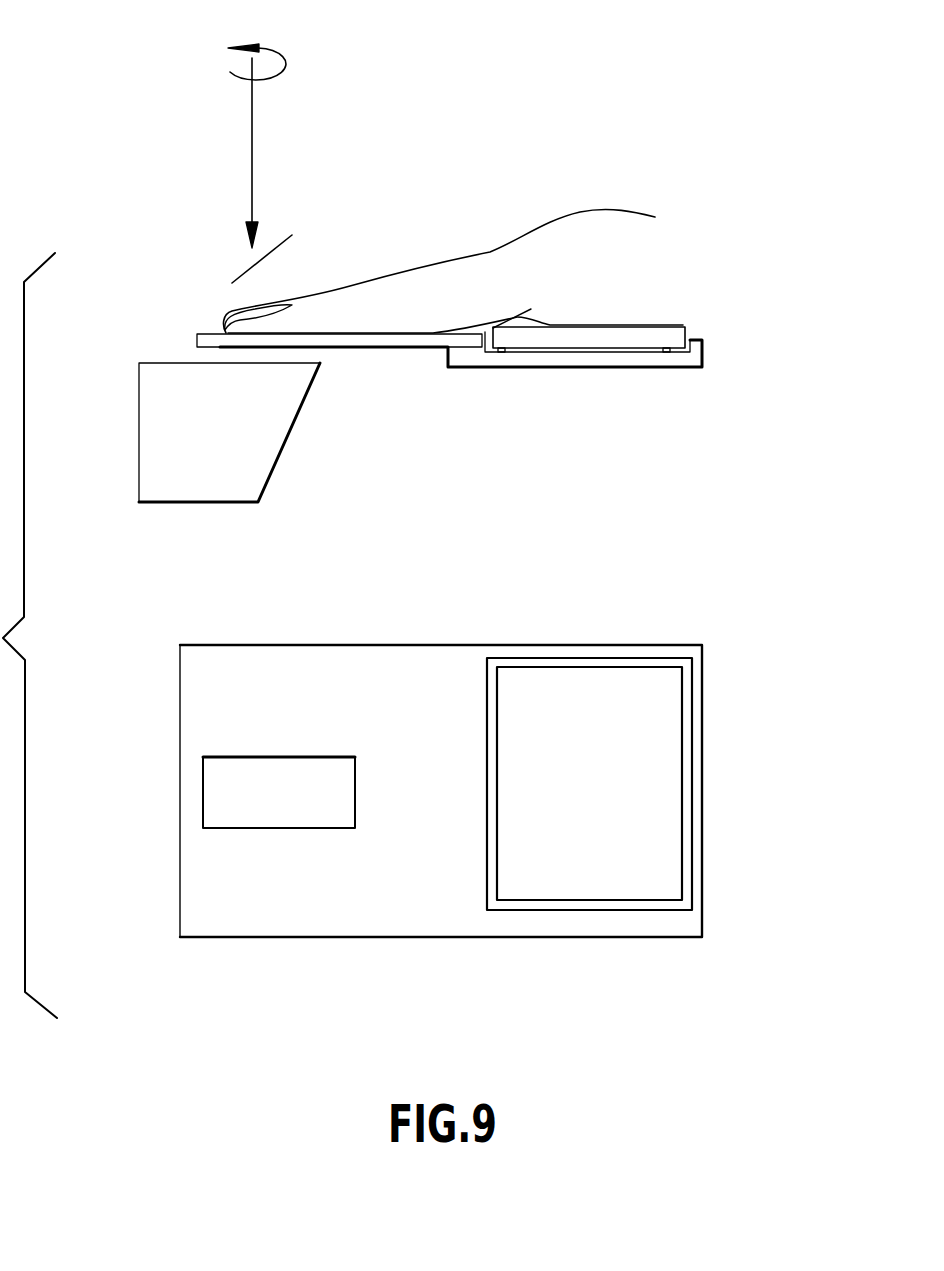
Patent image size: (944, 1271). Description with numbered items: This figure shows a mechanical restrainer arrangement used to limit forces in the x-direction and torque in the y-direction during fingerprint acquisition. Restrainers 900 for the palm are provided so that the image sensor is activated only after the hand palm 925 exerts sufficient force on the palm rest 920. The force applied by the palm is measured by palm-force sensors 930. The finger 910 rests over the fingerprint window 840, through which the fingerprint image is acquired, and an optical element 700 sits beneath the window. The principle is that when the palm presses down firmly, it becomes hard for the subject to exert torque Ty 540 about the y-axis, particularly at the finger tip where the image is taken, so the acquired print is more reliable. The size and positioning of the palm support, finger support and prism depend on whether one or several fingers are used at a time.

The torque Ty 540 is at (265, 47).
The lens / optical module 700 is at (140, 455).
The fingerprint window 840 is at (214, 345).
The restrainers 900 is at (298, 938).
The finger 910 is at (362, 310).
The palm rest 920 is at (705, 348).
The hand palm 925 is at (685, 322).
The palm-force sensors 930 is at (637, 352).